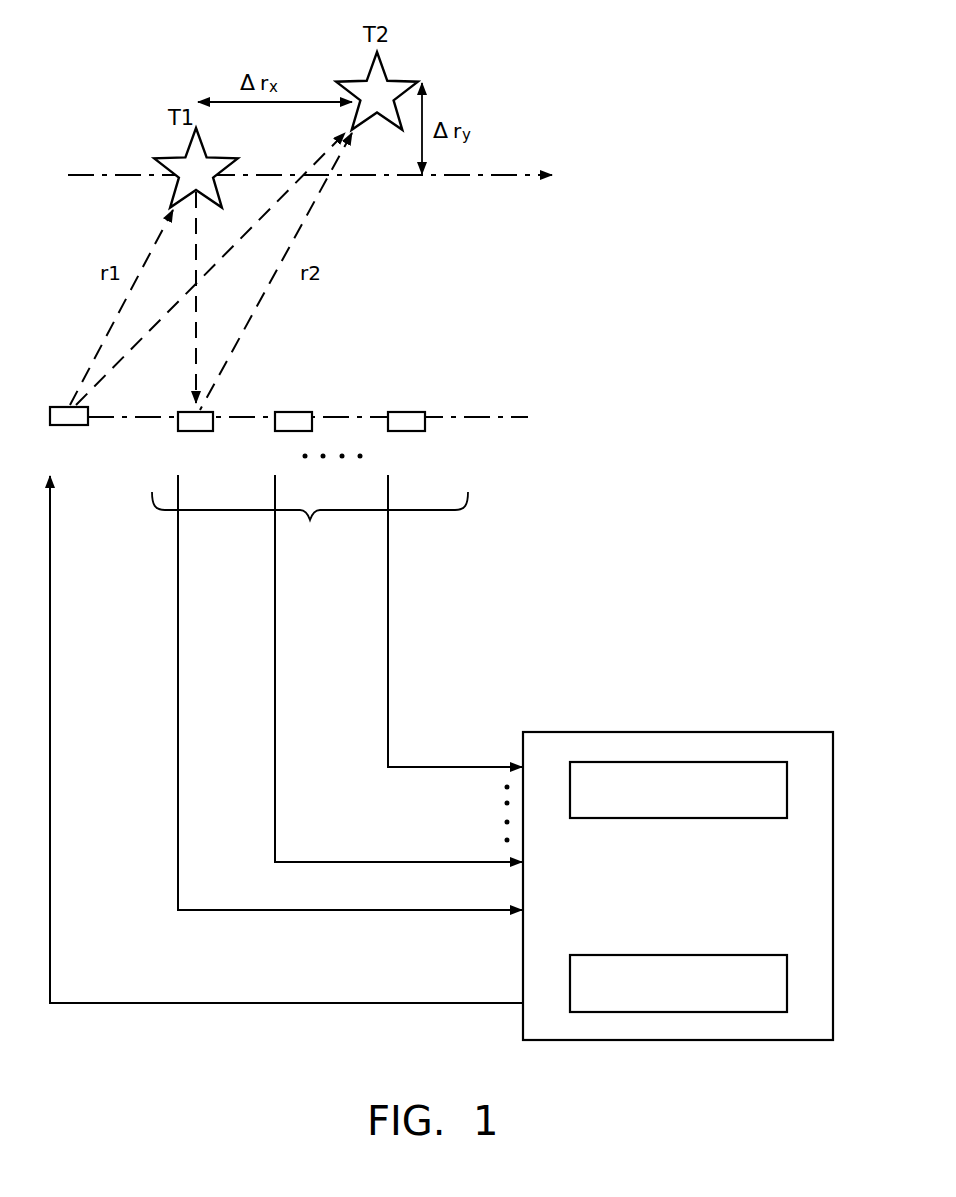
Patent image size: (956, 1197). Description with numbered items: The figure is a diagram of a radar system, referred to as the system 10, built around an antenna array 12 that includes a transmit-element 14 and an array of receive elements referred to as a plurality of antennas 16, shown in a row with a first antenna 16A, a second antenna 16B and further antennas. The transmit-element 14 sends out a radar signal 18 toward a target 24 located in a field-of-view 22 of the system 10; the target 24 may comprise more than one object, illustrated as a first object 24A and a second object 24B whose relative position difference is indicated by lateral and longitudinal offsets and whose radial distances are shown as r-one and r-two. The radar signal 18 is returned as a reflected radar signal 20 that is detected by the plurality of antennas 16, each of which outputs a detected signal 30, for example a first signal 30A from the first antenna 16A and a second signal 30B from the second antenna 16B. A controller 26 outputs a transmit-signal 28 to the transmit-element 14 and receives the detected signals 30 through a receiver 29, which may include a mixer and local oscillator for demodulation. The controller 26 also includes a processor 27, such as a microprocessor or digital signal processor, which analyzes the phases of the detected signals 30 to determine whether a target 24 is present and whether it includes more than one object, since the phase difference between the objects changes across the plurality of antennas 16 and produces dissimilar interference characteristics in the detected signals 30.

The system 10 is at (646, 150).
The antenna array 12 is at (478, 328).
The transmit-element 14 is at (60, 407).
The plurality of antennas 16 is at (310, 451).
The first antenna 16A is at (211, 412).
The second antenna 16B is at (300, 412).
The radar signal 18 is at (176, 303).
The reflected radar signal 20 is at (196, 303).
The field-of-view 22 is at (438, 52).
The target 24 is at (176, 58).
The first object 24A is at (185, 165).
The second object 24B is at (363, 82).
The controller 26 is at (640, 893).
The processor 27 is at (707, 762).
The transmit-signal 28 is at (205, 1003).
The receiver 29 is at (720, 1012).
The detected signal 30 is at (323, 715).
The first signal 30A is at (240, 910).
The second signal 30B is at (295, 862).